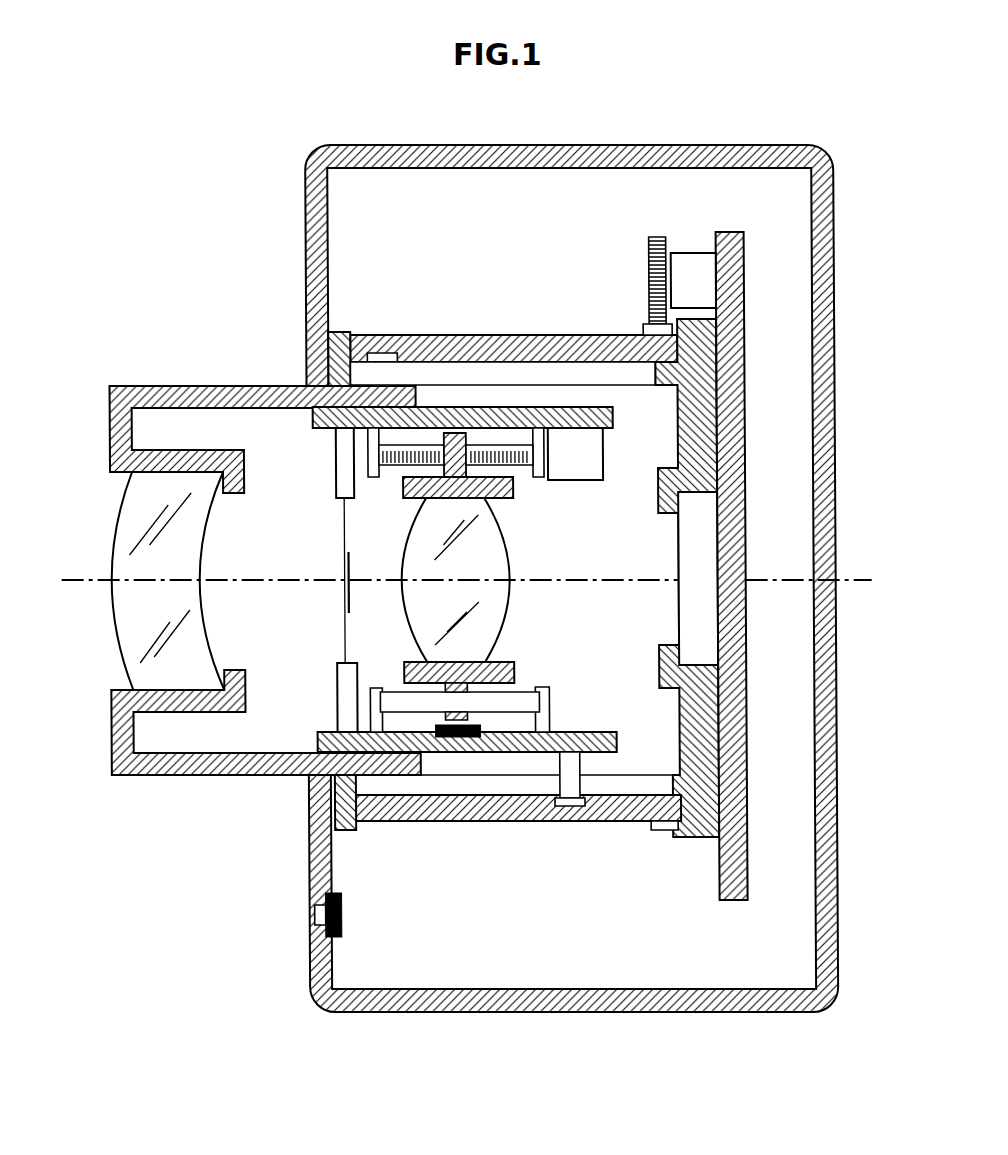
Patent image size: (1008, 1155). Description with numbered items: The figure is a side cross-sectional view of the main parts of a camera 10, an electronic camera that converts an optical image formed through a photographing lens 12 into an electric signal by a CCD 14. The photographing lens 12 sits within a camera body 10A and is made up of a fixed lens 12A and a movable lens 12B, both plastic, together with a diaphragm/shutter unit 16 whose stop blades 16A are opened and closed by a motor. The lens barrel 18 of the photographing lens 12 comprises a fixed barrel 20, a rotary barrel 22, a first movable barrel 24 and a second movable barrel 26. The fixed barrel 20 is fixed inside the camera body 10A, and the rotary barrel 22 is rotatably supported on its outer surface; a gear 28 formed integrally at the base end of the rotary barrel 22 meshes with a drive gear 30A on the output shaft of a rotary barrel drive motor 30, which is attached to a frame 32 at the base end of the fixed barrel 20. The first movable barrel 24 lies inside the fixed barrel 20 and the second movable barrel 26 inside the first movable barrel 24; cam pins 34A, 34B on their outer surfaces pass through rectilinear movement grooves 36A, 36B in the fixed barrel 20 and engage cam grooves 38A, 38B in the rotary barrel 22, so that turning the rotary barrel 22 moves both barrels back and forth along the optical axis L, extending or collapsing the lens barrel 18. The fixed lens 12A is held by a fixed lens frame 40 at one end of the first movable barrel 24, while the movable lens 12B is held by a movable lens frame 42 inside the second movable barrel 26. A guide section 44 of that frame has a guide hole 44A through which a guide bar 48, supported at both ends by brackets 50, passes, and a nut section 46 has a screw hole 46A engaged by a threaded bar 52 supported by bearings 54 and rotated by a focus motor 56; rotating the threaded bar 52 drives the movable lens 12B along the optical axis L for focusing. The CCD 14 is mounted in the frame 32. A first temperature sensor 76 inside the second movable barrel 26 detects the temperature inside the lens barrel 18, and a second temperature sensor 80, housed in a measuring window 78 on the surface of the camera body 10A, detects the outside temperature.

The camera 10 is at (112, 233).
The camera body 10A is at (786, 146).
The photographing lens 12 is at (70, 530).
The fixed lens 12A is at (128, 612).
The movable lens 12B is at (509, 598).
The CCD 14 is at (685, 590).
The diaphragm/shutter unit 16 is at (314, 580).
The stop blades 16A is at (343, 567).
The lens barrel 18 is at (200, 368).
The fixed barrel 20 is at (525, 607).
The rotary barrel 22 is at (503, 324).
The first movable barrel 24 is at (268, 386).
The second movable barrel 26 is at (480, 800).
The gear 28 is at (643, 330).
The rotary barrel drive motor 30 is at (690, 260).
The drive gear 30A is at (648, 253).
The frame 32 is at (745, 415).
The cam pins 34A is at (420, 412).
The cam pins 34B is at (520, 752).
The rectilinear movement grooves 36A is at (510, 373).
The rectilinear movement grooves 36B is at (610, 820).
The cam grooves 38A is at (385, 353).
The cam grooves 38B is at (576, 800).
The fixed lens frame 40 is at (195, 710).
The movable lens frame 42 is at (485, 495).
The guide section 44 is at (473, 770).
The guide hole 44A is at (470, 716).
The nut section 46 is at (452, 396).
The screw hole 46A is at (460, 435).
The guide bar 48 is at (405, 700).
The brackets 50 is at (376, 688).
The threaded bar 52 is at (388, 465).
The bearings 54 is at (362, 437).
The focus motor 56 is at (595, 462).
The first temperature sensor 76 is at (453, 740).
The measuring window 78 is at (311, 915).
The second temperature sensor 80 is at (338, 920).
The optical axis L is at (848, 580).